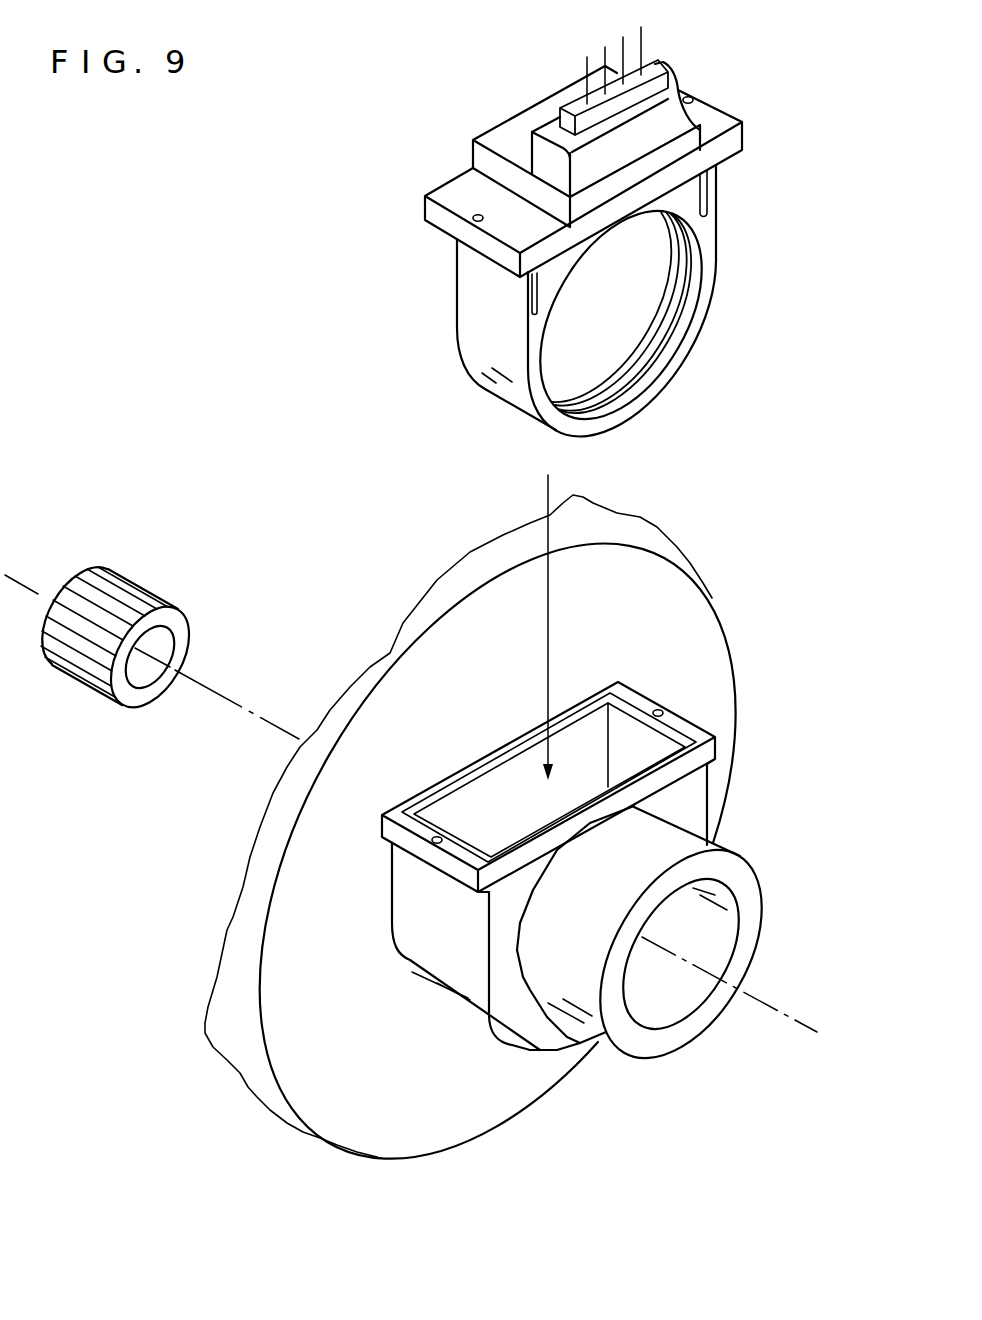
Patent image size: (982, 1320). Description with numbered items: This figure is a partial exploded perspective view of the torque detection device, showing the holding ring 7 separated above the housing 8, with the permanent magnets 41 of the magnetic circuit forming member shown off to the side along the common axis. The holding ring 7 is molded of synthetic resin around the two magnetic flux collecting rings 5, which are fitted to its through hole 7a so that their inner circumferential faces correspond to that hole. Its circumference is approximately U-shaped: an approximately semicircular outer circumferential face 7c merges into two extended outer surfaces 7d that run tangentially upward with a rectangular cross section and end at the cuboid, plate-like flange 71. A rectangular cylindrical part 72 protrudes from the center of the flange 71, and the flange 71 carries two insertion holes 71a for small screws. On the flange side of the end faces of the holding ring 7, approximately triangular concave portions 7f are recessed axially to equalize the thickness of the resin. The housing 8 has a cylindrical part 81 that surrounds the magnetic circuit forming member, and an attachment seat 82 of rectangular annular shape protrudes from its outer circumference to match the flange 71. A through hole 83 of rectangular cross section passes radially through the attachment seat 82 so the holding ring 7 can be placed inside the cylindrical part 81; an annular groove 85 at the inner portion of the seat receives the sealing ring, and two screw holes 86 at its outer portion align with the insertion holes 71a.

The magnetic flux collecting ring 5 is at (632, 318).
The holding ring 7 is at (547, 414).
The through hole 7a is at (670, 338).
The outer circumferential face 7c is at (503, 397).
The extended outer surface 7d is at (478, 288).
The concave portion 7f is at (535, 297).
The flange 71 is at (745, 118).
The insertion hole 71a is at (689, 96).
The rectangular cylindrical part 72 is at (660, 155).
The housing 8 is at (741, 770).
The cylindrical part 81 is at (585, 1032).
The attachment seat 82 is at (688, 728).
The through hole 83 is at (472, 798).
The annular groove 85 is at (625, 700).
The screw hole 86 is at (662, 706).
The permanent magnet 41 is at (60, 672).